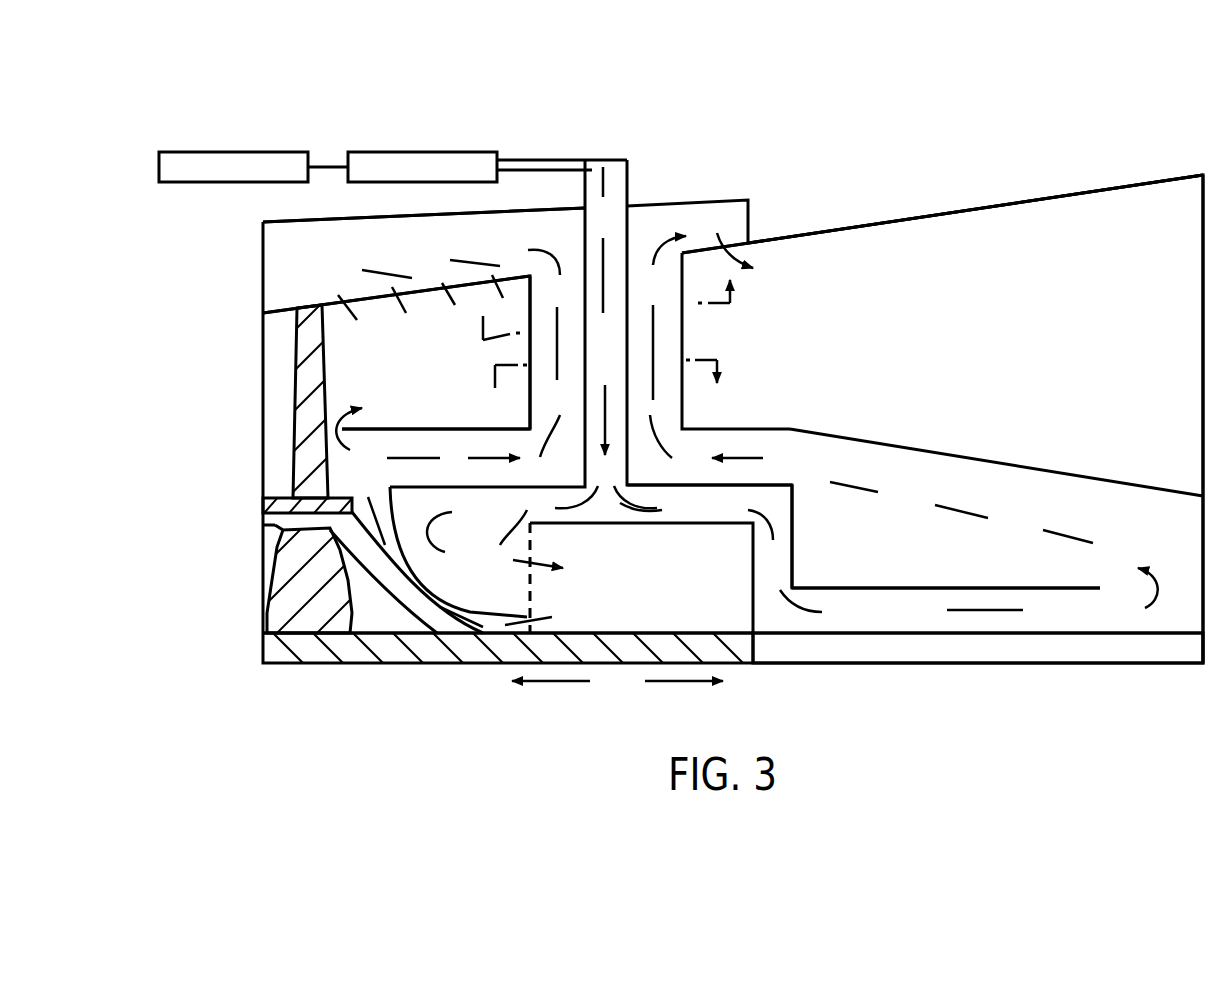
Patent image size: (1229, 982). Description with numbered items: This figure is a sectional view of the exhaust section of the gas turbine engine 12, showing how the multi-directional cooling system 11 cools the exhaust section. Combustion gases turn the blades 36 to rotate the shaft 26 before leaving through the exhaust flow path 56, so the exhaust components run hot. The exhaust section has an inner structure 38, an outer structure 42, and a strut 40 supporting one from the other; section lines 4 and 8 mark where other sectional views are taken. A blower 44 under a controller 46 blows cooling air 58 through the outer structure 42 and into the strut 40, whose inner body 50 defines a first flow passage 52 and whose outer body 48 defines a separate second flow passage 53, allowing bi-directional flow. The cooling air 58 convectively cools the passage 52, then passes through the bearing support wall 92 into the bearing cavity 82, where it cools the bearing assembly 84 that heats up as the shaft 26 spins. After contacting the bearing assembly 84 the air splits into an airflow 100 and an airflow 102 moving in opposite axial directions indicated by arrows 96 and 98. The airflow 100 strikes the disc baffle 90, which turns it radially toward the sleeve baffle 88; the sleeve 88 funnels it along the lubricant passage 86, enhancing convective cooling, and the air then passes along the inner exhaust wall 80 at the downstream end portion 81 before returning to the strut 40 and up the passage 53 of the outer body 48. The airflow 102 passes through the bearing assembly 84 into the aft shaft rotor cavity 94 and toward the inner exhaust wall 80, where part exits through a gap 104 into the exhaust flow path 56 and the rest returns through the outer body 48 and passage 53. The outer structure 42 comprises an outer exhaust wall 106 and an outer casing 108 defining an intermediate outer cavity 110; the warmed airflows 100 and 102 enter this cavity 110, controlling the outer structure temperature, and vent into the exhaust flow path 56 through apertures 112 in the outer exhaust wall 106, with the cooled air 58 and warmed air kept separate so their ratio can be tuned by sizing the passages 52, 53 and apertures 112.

The section line 4 is at (608, 375).
The section line 8 is at (604, 312).
The multi-directional cooling system 11 is at (690, 140).
The gas turbine engine 12 is at (925, 98).
The shaft 26 is at (390, 652).
The blades 36 is at (293, 465).
The inner structure 38 is at (1056, 463).
The strut 40 is at (688, 405).
The outer structure 42 is at (1020, 200).
The blower 44 is at (420, 152).
The controller 46 is at (233, 152).
The outer body 48 is at (683, 420).
The inner body 50 is at (690, 318).
The first flow passage 52 is at (585, 405).
The second flow passage 53 is at (540, 350).
The exhaust flow path 56 is at (920, 349).
The cooling air 58 is at (591, 160).
The inner exhaust wall 80 is at (882, 437).
The downstream end portion 81 is at (1160, 492).
The bearing cavity 82 is at (727, 516).
The bearing assembly 84 is at (610, 640).
The lubricant passage 86 is at (870, 652).
The baffle (sleeve) 88 is at (888, 588).
The baffle (disc) 90 is at (792, 566).
The bearing support wall 92 is at (470, 489).
The aft shaft rotor cavity 94 is at (495, 627).
The axial direction arrow 96 is at (680, 682).
The axial direction arrow 98 is at (555, 682).
The airflow 100 is at (655, 338).
The airflow 102 is at (557, 345).
The gap 104 is at (335, 403).
The outer exhaust wall 106 is at (838, 228).
The outer casing 108 is at (352, 214).
The intermediate outer cavity 110 is at (410, 249).
The apertures 112 is at (338, 295).